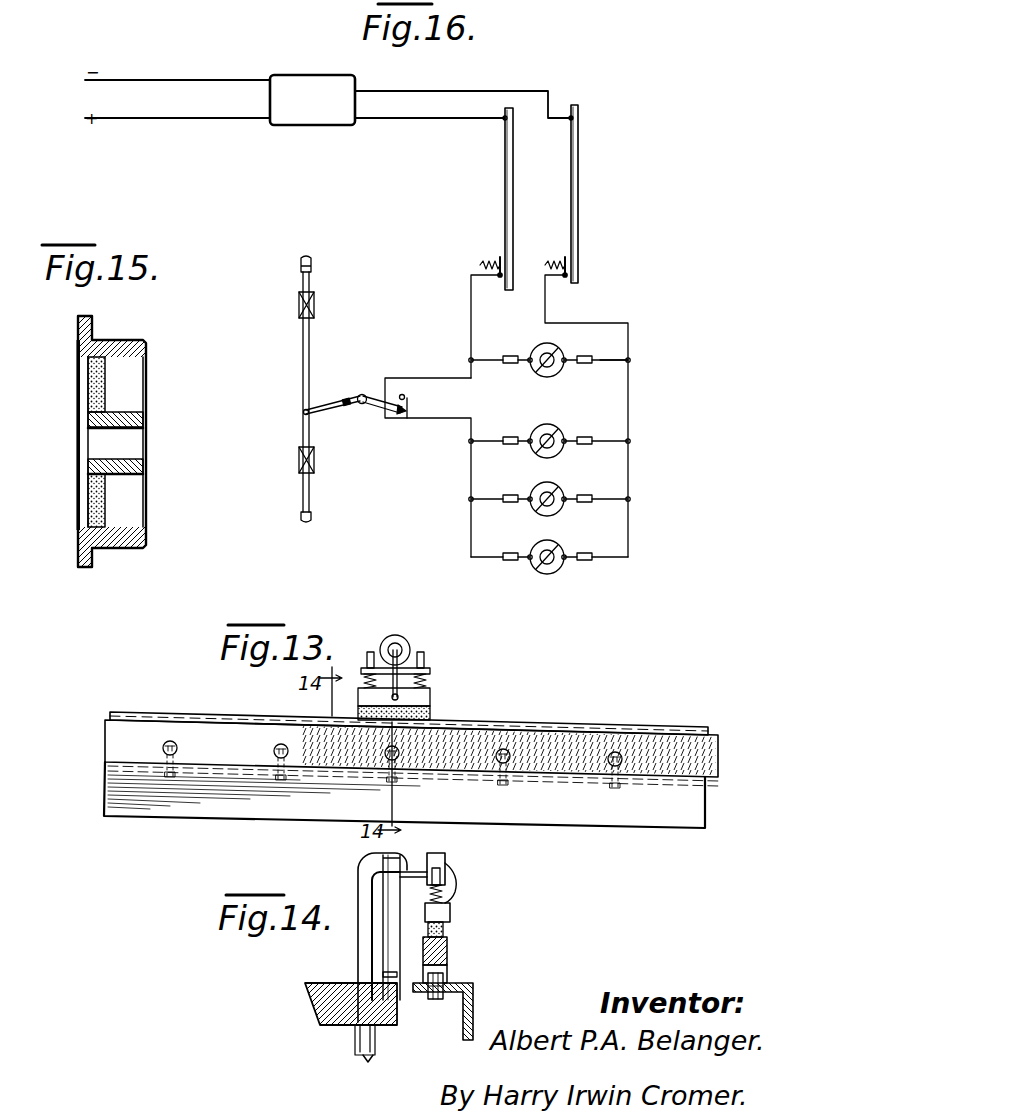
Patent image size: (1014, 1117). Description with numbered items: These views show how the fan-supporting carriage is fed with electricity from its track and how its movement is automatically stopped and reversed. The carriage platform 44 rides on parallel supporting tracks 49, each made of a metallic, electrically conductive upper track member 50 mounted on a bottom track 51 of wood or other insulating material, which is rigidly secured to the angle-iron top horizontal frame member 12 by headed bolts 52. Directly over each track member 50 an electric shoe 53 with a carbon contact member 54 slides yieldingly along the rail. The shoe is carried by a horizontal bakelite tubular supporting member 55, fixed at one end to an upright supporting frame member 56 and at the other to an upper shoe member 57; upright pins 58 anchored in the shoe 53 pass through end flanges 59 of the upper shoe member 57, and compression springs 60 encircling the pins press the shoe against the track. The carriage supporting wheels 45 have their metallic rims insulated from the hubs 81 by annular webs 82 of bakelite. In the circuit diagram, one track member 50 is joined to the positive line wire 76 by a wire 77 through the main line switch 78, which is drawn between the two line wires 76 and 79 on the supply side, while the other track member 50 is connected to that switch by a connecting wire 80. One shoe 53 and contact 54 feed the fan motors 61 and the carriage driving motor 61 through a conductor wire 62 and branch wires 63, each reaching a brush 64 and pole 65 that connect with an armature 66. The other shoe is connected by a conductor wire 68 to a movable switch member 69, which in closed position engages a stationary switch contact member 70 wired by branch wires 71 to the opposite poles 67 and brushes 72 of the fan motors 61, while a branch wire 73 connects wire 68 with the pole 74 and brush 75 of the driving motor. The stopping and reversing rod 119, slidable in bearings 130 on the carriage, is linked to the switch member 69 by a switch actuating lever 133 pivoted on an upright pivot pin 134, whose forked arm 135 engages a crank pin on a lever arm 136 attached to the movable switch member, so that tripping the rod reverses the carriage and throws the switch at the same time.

In FIG. 13, the top horizontal frame member 12 is at (150, 800).
In FIG. 14, the top horizontal frame member 12 is at (475, 1011).
In FIG. 14, the carriage frame member or platform 44 is at (333, 983).
In FIG. 15, the carriage supporting-wheel 45 is at (110, 340).
In FIG. 16, the supporting-track 49 is at (513, 182).
In FIG. 13, the supporting-track 49 is at (624, 717).
In FIG. 14, the supporting-track 49 is at (455, 952).
In FIG. 16, the upper track member 50 is at (505, 192).
In FIG. 13, the upper track member 50 is at (706, 728).
In FIG. 14, the upper track member 50 is at (450, 940).
In FIG. 13, the bottom track 51 is at (696, 756).
In FIG. 14, the bottom track 51 is at (450, 967).
In FIG. 13, the headed bolts 52 is at (275, 751).
In FIG. 14, the headed bolts 52 is at (445, 986).
In FIG. 16, the electric shoe 53 is at (486, 258).
In FIG. 13, the electric shoe 53 is at (430, 700).
In FIG. 14, the electric shoe 53 is at (450, 912).
In FIG. 16, the track engaging contact member 54 is at (505, 268).
In FIG. 13, the track engaging contact member 54 is at (430, 714).
In FIG. 14, the track engaging contact member 54 is at (428, 932).
In FIG. 13, the tubular supporting member 55 is at (405, 640).
In FIG. 14, the tubular supporting member 55 is at (360, 878).
In FIG. 14, the upright supporting frame member 56 is at (392, 922).
In FIG. 13, the upper shoe member 57 is at (392, 645).
In FIG. 14, the upper shoe member 57 is at (445, 861).
In FIG. 13, the upright pins 58 is at (370, 652).
In FIG. 14, the upright pins 58 is at (422, 884).
In FIG. 13, the end flanges 59 is at (361, 668).
In FIG. 13, the compression springs 60 is at (430, 679).
In FIG. 16, the fan motor 61 is at (560, 435).
In FIG. 16, the conductor wire 62 is at (602, 323).
In FIG. 13, the conductor wire 62 is at (400, 664).
In FIG. 14, the conductor wire 62 is at (456, 887).
In FIG. 16, the branch wires 63 is at (608, 360).
In FIG. 16, the brush 64 is at (565, 366).
In FIG. 16, the pole 65 is at (566, 356).
In FIG. 16, the armature 66 is at (548, 369).
In FIG. 16, the opposite pole 67 is at (538, 437).
In FIG. 16, the conductor wire 68 is at (471, 296).
In FIG. 16, the movable switch member 69 is at (380, 412).
In FIG. 16, the stationary switch contact member 70 is at (403, 414).
In FIG. 16, the branch wires 71 is at (485, 440).
In FIG. 16, the brush 72 is at (536, 446).
In FIG. 16, the branch wire 73 is at (471, 360).
In FIG. 16, the pole 74 is at (528, 366).
In FIG. 16, the brush 75 is at (532, 355).
In FIG. 16, the positive line wire 76 is at (193, 110).
In FIG. 16, the wire 77 is at (422, 118).
In FIG. 16, the main line switch 78 is at (309, 125).
In FIG. 16, the negative lead 79 is at (165, 80).
In FIG. 16, the connecting wire 80 is at (442, 91).
In FIG. 15, the hub 81 is at (143, 421).
In FIG. 15, the annular web 82 is at (100, 385).
In FIG. 16, the stopping and reversing rod 119 is at (303, 334).
In FIG. 16, the bearings 130 is at (300, 298).
In FIG. 16, the switch actuating lever 133 is at (328, 405).
In FIG. 16, the pivot pin 134 is at (346, 406).
In FIG. 16, the forked arm 135 is at (360, 395).
In FIG. 16, the lever arm 136 is at (366, 406).